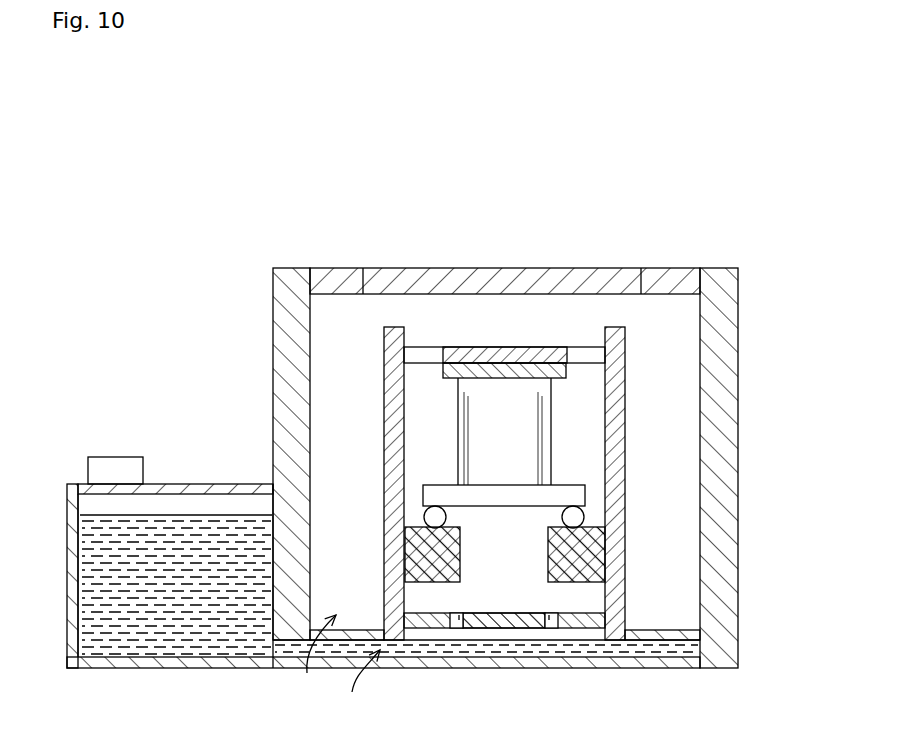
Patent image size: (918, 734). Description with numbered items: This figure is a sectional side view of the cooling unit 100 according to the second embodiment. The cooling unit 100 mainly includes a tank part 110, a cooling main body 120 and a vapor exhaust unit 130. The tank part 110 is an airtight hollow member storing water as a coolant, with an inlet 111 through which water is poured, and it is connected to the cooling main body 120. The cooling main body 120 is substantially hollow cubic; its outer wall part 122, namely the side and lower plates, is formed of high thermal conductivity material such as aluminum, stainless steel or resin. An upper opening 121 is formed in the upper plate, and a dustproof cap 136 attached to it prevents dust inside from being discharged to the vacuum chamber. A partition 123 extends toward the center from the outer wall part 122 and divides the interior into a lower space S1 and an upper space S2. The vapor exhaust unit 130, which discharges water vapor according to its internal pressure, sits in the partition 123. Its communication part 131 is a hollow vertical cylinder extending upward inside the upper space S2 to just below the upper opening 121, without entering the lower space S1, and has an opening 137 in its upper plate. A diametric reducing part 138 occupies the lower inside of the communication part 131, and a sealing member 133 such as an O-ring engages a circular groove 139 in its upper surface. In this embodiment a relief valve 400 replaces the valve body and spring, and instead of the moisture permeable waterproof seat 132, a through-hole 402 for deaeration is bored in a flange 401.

The cooling unit 100 is at (430, 384).
The tank part 110 is at (118, 386).
The inlet 111 is at (122, 457).
The cooling main body 120 is at (286, 246).
The upper opening 121 is at (641, 280).
The outer wall part 122 is at (273, 362).
The partition 123 is at (655, 630).
The vapor exhaust unit 130 is at (470, 302).
The communication part 131 is at (627, 335).
The moisture permeable waterproof seat 132 is at (492, 630).
The sealing member 133 is at (560, 517).
The dustproof cap 136 is at (544, 272).
The opening 137 is at (432, 348).
The diametric reducing part 138 is at (548, 552).
The circular groove 139 is at (445, 524).
The relief valve 400 is at (536, 400).
The flange 401 is at (503, 613).
The through-hole 402 is at (455, 613).
The lower space S1 is at (360, 681).
The upper space S2 is at (316, 656).